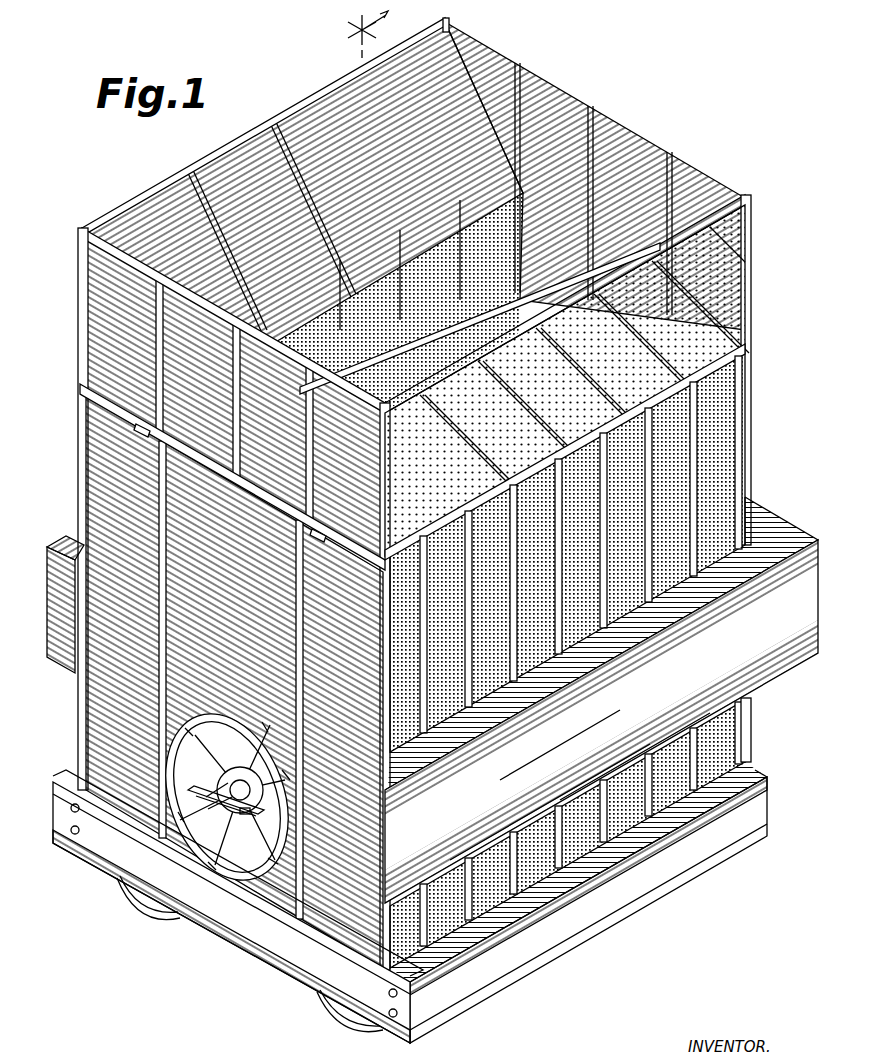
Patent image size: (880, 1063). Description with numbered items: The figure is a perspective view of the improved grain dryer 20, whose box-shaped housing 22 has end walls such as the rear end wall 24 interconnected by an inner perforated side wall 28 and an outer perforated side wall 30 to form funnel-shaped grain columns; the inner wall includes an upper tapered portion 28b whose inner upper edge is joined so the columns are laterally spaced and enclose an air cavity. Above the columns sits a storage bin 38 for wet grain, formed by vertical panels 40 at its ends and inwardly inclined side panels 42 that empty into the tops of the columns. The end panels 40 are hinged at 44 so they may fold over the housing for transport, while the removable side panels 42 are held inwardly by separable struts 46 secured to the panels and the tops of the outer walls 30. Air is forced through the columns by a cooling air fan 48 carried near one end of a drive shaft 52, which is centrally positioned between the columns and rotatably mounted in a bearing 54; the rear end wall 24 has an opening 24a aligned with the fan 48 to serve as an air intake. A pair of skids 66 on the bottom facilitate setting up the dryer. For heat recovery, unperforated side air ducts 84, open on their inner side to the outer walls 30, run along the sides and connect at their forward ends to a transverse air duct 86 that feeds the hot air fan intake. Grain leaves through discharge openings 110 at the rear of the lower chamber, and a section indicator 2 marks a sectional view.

The section line 2 is at (375, 34).
The grain dryer 20 is at (142, 175).
The housing 22 is at (76, 455).
The end wall 24 is at (106, 691).
The opening 24a is at (226, 852).
The inner perforated side wall 28 is at (551, 284).
The upper tapered portion 28b is at (484, 314).
The outer perforated side wall 30 is at (528, 860).
The storage bin 38 is at (78, 282).
The vertical panel 40 is at (606, 150).
The side panel 42 is at (308, 136).
The hinge 44 is at (142, 425).
The strut 46 is at (448, 460).
The cooling air fan 48 is at (244, 784).
The drive shaft 52 is at (232, 801).
The bearing 54 is at (266, 808).
The skid 66 is at (128, 906).
The side air duct 84 is at (758, 682).
The transverse air duct 86 is at (766, 522).
The discharge opening 110 is at (102, 854).